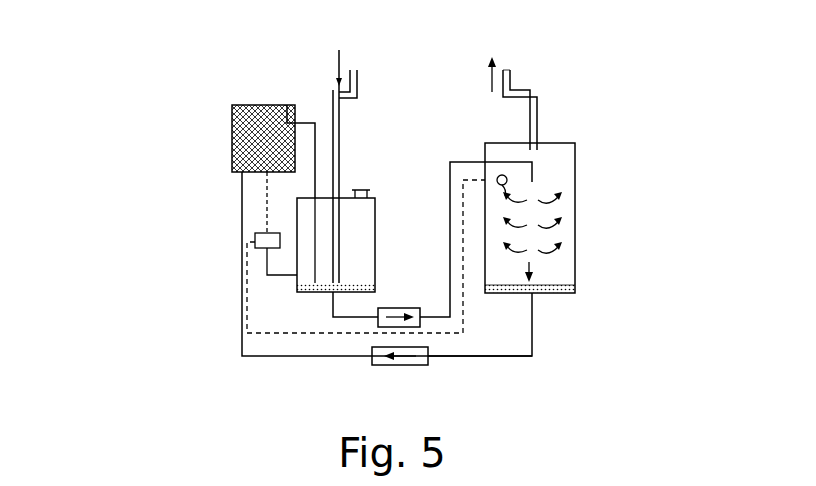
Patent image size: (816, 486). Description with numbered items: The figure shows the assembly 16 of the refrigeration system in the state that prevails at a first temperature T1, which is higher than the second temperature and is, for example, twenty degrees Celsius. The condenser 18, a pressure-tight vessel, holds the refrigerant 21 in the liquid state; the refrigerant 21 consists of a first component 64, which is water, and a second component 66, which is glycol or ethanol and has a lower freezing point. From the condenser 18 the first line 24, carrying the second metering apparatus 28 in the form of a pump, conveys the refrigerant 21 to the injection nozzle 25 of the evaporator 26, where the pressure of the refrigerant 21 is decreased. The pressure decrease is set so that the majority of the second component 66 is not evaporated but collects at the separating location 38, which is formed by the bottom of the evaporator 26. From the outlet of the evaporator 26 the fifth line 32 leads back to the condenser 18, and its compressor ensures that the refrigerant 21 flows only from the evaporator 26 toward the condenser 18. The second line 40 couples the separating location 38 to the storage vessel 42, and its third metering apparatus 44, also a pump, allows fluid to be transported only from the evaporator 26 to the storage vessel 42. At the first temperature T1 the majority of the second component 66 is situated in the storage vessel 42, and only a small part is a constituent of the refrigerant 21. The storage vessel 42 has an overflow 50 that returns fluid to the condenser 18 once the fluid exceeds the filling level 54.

The assembly 16 is at (167, 80).
The filling level 54 is at (232, 107).
The storage vessel 42 is at (230, 142).
The second component 66 is at (232, 165).
The overflow 50 is at (298, 106).
The condenser 18 is at (297, 257).
The first line 24 is at (358, 318).
The second metering apparatus 28 is at (390, 307).
The third metering apparatus 44 is at (413, 365).
The second line 40 is at (488, 357).
The separating location 38 is at (557, 293).
The evaporator 26 is at (577, 163).
The refrigerant 21 is at (558, 234).
The injection nozzle 25 is at (502, 158).
The first component 64 is at (540, 108).
The fifth line 32 is at (518, 84).
The first temperature T1 is at (657, 102).